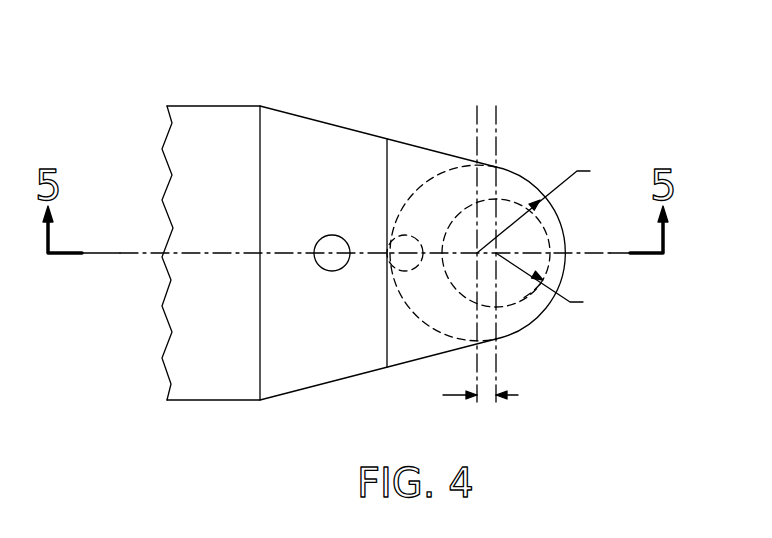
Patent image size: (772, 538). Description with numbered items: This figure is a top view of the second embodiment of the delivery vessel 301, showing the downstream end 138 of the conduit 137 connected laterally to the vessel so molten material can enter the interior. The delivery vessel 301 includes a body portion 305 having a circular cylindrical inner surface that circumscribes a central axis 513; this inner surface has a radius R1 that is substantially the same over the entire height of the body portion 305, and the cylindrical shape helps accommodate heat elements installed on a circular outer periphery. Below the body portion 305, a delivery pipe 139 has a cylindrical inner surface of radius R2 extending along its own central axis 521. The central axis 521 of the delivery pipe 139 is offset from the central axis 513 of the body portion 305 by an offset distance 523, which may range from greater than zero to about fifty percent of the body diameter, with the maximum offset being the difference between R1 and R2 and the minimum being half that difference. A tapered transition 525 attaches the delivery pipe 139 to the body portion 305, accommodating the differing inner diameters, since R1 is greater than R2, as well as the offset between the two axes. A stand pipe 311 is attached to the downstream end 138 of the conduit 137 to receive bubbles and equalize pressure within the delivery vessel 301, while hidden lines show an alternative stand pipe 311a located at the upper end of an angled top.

The delivery vessel 301 is at (474, 197).
The body portion 305 is at (527, 181).
The radius of the inner cylindrical surface of the body portion R1 is at (552, 204).
The radius of the inner cylindrical surface of the delivery pipe R2 is at (559, 285).
The central axis of the delivery pipe 521 is at (497, 252).
The central axis of the body portion 513 is at (477, 253).
The stand pipe 311 is at (320, 237).
The stand pipe 311a is at (392, 232).
The delivery pipe 139 is at (518, 305).
The offset distance 523 is at (510, 397).
The tapered transition 525 is at (435, 318).
The downstream end 138 is at (285, 394).
The conduit 137 is at (211, 312).